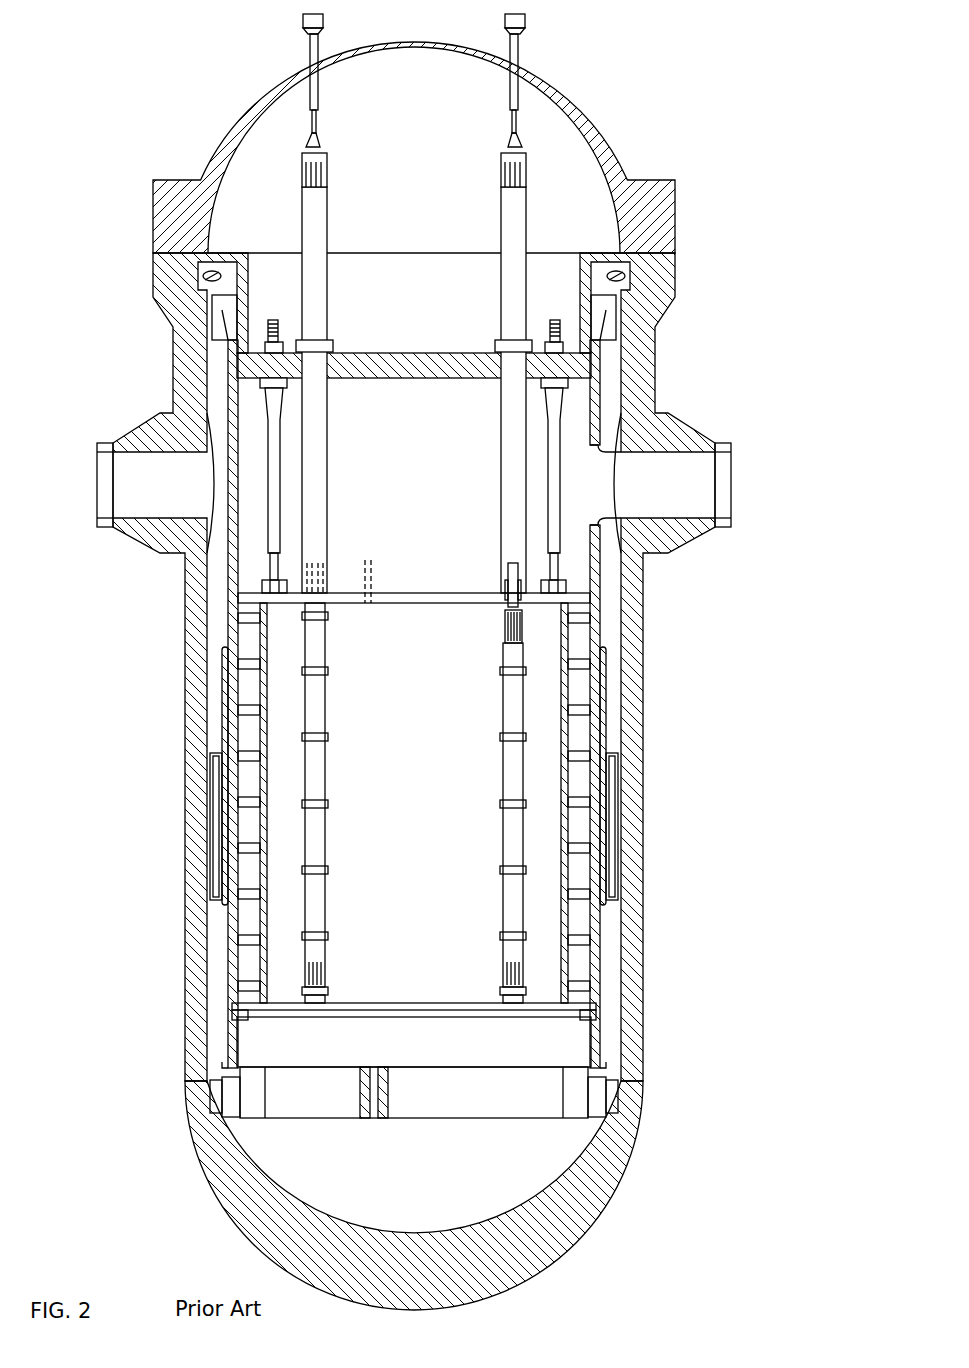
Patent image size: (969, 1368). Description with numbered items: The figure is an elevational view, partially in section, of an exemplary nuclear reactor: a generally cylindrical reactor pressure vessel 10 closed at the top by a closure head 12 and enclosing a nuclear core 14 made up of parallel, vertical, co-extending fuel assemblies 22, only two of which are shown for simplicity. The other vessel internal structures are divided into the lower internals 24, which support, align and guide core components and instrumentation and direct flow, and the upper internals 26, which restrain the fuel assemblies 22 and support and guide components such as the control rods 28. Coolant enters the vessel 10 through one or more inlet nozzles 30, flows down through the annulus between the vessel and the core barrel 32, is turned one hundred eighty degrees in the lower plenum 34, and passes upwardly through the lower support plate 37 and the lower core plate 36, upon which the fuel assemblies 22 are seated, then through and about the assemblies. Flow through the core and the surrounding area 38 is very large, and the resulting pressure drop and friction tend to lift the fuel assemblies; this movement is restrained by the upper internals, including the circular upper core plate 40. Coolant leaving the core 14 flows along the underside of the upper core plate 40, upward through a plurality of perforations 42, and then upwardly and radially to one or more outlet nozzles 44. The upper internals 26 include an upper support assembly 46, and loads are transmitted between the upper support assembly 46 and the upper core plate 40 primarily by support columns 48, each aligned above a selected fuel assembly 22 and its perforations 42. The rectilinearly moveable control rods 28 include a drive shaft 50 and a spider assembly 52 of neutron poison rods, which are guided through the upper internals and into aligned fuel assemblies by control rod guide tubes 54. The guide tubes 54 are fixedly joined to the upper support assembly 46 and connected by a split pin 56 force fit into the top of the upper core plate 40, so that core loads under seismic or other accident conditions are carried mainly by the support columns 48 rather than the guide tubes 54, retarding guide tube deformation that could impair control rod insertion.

The reactor pressure vessel 10 is at (645, 700).
The closure head 12 is at (673, 221).
The nuclear core 14 is at (398, 786).
The fuel assemblies 22 is at (328, 702).
The lower internals 24 is at (398, 1043).
The upper internals 26 is at (401, 448).
The control rods 28 is at (497, 643).
The inlet nozzles 30 is at (135, 430).
The core barrel 32 is at (228, 590).
The lower plenum 34 is at (585, 1172).
The lower core plate 36 is at (482, 1003).
The lower support plate 37 is at (455, 1108).
The core surrounding area 38 is at (472, 777).
The upper core plate 40 is at (455, 612).
The perforations 42 is at (372, 588).
The outlet nozzles 44 is at (692, 431).
The upper support assembly 46 is at (591, 253).
The support columns 48 is at (285, 480).
The drive shaft 50 is at (505, 592).
The spider assembly 52 is at (508, 607).
The control rod guide tubes 54 is at (330, 418).
The split pin 56 is at (582, 636).